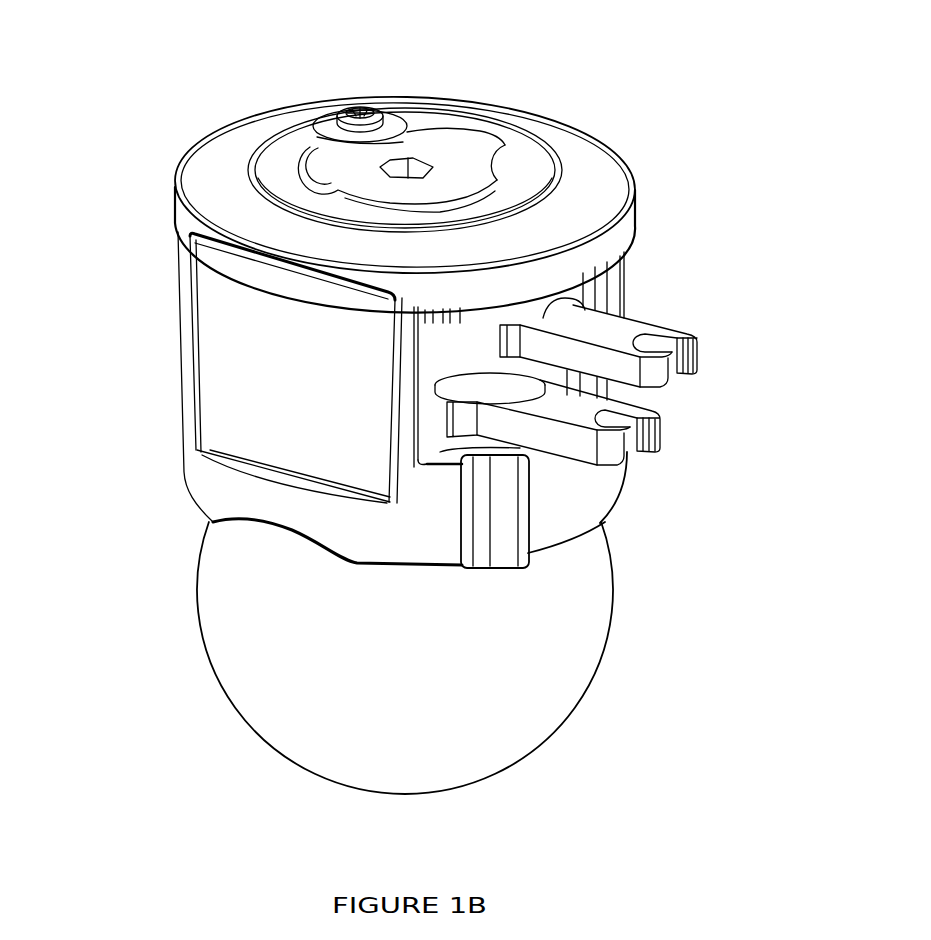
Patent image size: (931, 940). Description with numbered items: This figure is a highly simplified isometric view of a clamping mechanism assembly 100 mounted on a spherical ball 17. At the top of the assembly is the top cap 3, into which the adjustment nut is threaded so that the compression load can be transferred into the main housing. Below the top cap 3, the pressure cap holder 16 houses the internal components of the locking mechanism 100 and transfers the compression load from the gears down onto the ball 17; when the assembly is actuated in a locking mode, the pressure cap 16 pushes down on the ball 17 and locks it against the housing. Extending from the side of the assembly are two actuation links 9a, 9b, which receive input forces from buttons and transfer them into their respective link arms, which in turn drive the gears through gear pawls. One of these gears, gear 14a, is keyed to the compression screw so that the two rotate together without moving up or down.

The clamping mechanism assembly 100 is at (674, 152).
The top cap 3 is at (632, 219).
The actuation link 9a is at (694, 330).
The actuation link 9b is at (635, 467).
The gear 14a is at (445, 337).
The pressure cap holder 16 is at (198, 493).
The ball 17 is at (240, 690).